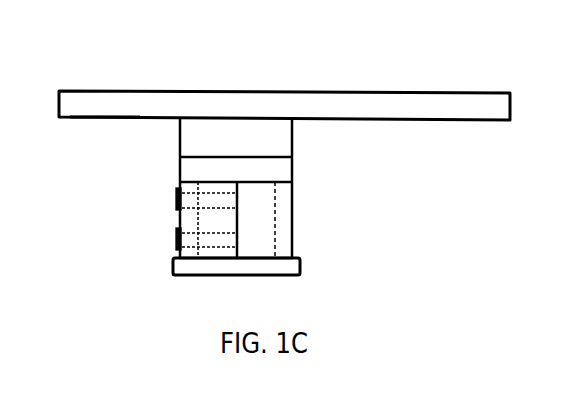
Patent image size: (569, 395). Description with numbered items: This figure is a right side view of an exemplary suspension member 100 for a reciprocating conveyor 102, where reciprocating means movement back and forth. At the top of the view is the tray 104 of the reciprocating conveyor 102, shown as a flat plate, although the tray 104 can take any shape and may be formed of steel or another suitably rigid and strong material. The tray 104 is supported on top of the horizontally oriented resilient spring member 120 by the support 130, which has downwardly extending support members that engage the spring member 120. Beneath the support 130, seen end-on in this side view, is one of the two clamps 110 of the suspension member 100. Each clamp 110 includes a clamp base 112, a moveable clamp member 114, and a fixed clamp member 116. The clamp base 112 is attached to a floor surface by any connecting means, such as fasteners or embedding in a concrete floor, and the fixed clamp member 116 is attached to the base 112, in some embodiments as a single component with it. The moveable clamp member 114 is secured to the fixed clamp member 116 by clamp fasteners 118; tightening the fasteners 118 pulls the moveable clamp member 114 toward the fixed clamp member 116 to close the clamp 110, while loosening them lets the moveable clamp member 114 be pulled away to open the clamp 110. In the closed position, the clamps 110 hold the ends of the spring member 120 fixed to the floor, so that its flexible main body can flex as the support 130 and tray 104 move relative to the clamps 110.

The suspension member 100 is at (400, 187).
The reciprocating conveyor 102 is at (457, 75).
The tray 104 is at (113, 120).
The clamp 110 is at (165, 256).
The clamp base 112 is at (303, 268).
The moveable clamp member 114 is at (182, 184).
The fixed clamp member 116 is at (293, 228).
The clamp fasteners 118 is at (176, 243).
The horizontally oriented resilient spring member 120 is at (297, 193).
The support 130 is at (290, 158).